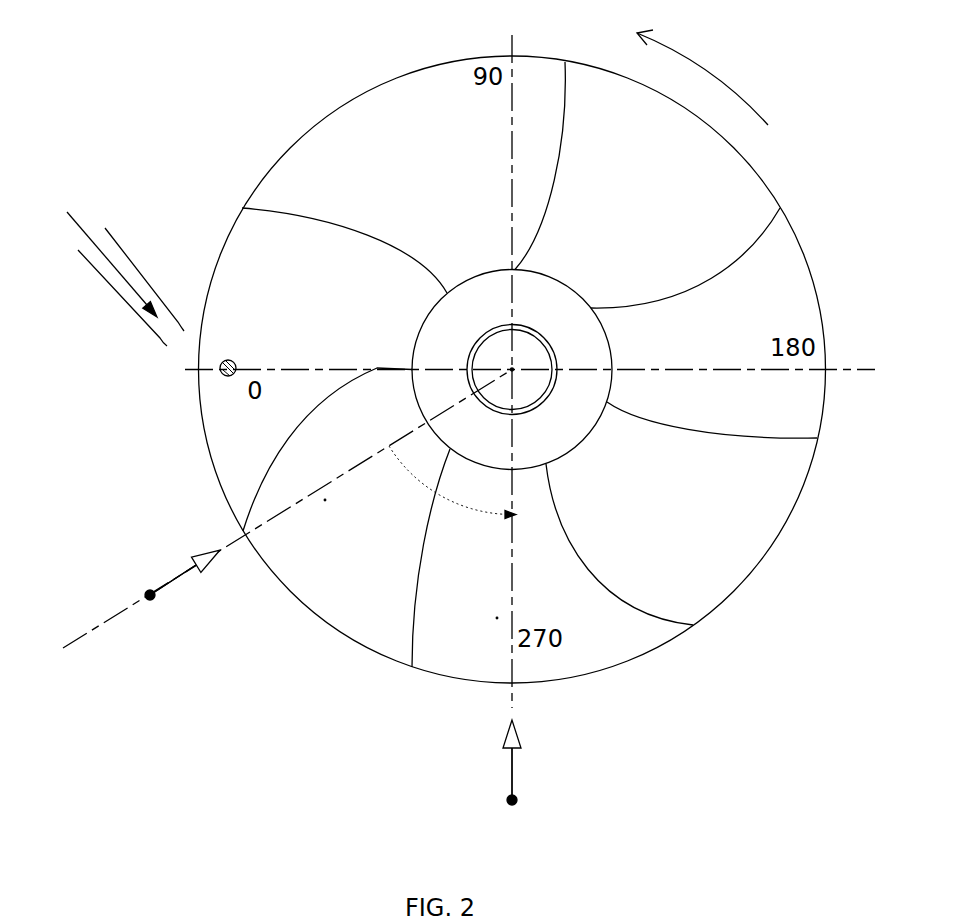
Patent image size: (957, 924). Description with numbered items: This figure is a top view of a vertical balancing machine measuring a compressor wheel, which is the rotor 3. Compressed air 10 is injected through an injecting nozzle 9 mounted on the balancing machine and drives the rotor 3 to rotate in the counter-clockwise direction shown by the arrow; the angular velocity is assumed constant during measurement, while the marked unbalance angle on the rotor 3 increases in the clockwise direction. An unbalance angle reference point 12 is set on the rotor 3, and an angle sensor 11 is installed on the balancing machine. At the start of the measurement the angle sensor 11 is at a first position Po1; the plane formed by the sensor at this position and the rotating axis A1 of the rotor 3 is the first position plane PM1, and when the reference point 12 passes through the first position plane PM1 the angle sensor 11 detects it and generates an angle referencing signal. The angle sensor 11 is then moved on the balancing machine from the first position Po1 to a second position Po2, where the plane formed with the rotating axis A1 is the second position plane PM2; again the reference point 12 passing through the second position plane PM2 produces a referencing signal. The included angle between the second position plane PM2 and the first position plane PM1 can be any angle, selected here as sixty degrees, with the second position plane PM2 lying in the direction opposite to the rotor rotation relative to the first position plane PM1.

The rotor 3 is at (707, 557).
The injecting nozzle 9 is at (131, 287).
The compressed air 10 is at (93, 256).
The angle sensor 11 is at (180, 595).
The unbalance angle reference point 12 is at (218, 385).
The rotating axis A1 is at (495, 360).
The first position Po1 is at (481, 776).
The second position Po2 is at (156, 572).
The first position plane PM1 is at (484, 620).
The second position plane PM2 is at (321, 513).